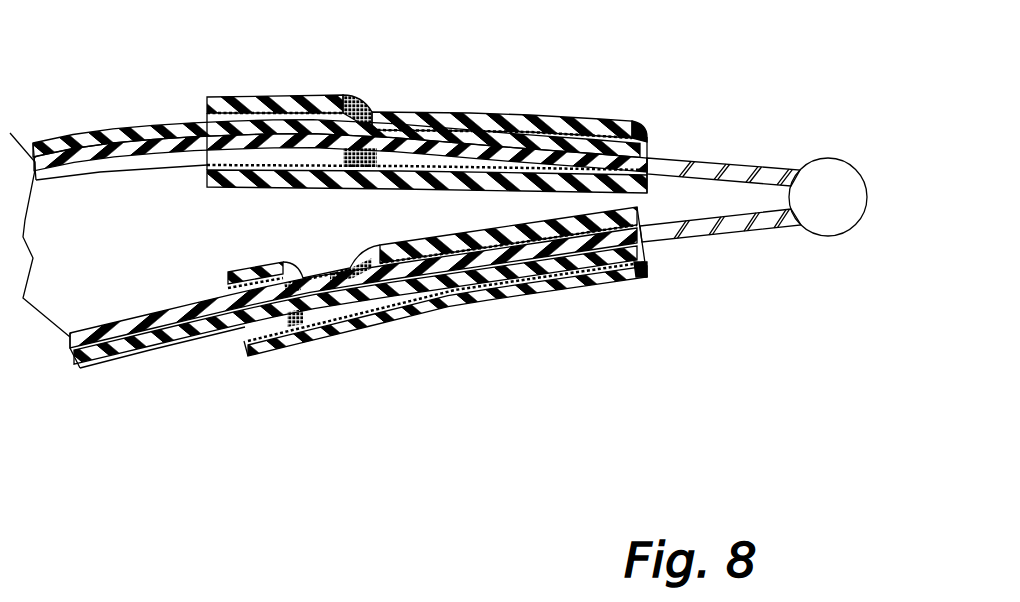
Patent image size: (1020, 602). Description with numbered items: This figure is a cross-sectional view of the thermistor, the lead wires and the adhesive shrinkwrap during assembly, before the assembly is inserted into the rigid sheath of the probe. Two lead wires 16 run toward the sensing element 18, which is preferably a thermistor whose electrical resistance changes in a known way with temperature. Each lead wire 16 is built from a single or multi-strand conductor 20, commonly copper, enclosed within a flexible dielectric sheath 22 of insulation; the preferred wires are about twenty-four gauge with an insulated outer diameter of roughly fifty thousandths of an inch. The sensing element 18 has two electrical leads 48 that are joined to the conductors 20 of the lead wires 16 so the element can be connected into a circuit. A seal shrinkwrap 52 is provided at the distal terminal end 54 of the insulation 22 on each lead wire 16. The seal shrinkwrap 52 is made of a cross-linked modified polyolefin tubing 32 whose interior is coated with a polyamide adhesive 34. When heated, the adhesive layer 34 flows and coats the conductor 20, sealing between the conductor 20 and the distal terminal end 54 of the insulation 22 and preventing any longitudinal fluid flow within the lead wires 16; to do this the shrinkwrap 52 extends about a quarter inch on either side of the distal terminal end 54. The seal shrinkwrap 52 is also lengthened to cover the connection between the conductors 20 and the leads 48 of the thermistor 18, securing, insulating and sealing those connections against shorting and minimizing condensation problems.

The lead wire 16 is at (117, 127).
The sensing element 18 is at (838, 188).
The conductor 20 is at (186, 132).
The dielectric sheath 22 is at (150, 172).
The cross-linked modified polyolefin tubing 32 is at (290, 95).
The polyamide adhesive 34 is at (347, 120).
The electrical lead 48 is at (713, 162).
The seal shrinkwrap 52 is at (575, 122).
The distal terminal end 54 is at (344, 117).